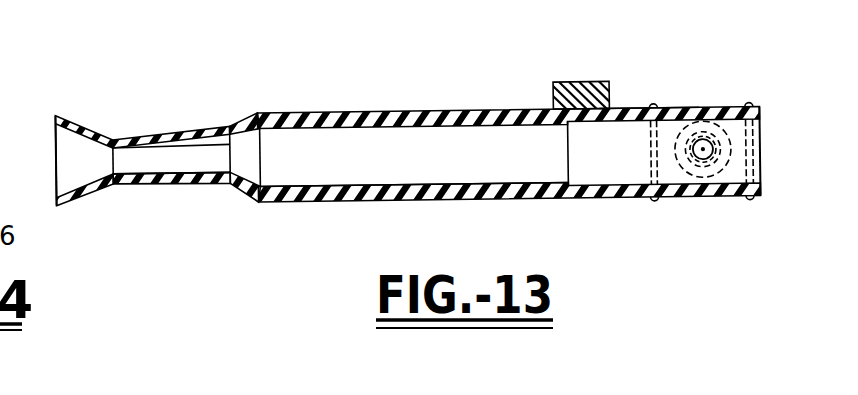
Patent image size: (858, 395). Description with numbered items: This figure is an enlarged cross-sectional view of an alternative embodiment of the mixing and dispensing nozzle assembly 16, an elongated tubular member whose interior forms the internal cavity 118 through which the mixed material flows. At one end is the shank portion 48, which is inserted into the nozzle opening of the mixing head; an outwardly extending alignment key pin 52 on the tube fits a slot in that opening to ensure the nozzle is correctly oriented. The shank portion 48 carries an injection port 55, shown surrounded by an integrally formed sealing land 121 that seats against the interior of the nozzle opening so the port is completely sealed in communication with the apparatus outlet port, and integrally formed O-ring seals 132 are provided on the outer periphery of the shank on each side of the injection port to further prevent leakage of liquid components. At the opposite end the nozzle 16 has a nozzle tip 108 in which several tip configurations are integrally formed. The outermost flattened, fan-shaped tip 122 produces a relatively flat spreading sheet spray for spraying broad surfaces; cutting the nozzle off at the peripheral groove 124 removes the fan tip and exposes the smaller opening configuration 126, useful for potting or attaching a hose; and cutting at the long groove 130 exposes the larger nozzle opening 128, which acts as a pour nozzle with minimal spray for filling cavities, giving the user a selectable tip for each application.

The mixing and dispensing nozzle assembly 16 is at (446, 101).
The internal cavity 118 is at (420, 180).
The flattened fan-shaped tip 122 is at (81, 122).
The nozzle tip 108 is at (72, 158).
The groove 124 is at (114, 137).
The nozzle tip configuration 126 is at (201, 127).
The nozzle tip 128 is at (244, 113).
The long groove 130 is at (244, 199).
The alignment key pin 52 is at (587, 82).
The shank portion 48 is at (638, 110).
The O-ring seals 132 is at (763, 125).
The sealing land 121 is at (727, 156).
The injection port 55 is at (703, 151).